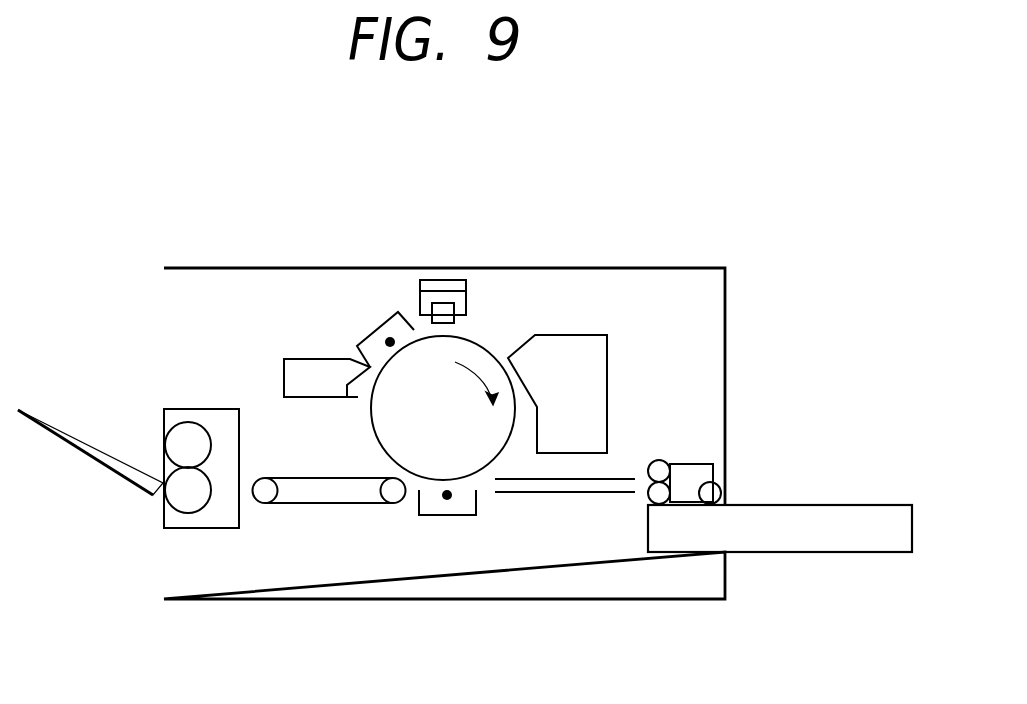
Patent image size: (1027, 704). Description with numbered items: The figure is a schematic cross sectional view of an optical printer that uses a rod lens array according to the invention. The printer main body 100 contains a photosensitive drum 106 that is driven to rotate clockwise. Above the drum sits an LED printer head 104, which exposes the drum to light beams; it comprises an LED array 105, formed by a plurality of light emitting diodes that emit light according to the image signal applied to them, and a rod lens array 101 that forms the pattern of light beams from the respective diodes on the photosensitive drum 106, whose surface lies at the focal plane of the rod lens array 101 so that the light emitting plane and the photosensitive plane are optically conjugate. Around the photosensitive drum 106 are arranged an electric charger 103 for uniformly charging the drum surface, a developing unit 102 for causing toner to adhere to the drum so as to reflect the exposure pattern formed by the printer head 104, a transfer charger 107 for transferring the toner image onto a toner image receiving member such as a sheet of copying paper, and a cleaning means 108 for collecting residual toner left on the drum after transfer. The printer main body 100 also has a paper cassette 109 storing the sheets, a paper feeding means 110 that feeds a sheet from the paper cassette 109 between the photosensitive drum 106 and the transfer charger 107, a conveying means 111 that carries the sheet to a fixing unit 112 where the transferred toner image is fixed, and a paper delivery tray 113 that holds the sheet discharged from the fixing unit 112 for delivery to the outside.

The printer main body 100 is at (637, 617).
The rod lens array 101 is at (451, 318).
The developing unit 102 is at (602, 355).
The electric charger 103 is at (387, 330).
The LED printer head 104 is at (462, 298).
The LED array 105 is at (453, 283).
The photosensitive drum 106 is at (383, 438).
The transfer charger 107 is at (447, 500).
The cleaning means 108 is at (328, 367).
The paper cassette 109 is at (775, 543).
The paper feeding means 110 is at (688, 472).
The conveying means 111 is at (327, 498).
The fixing unit 112 is at (188, 502).
The paper delivery tray 113 is at (113, 465).